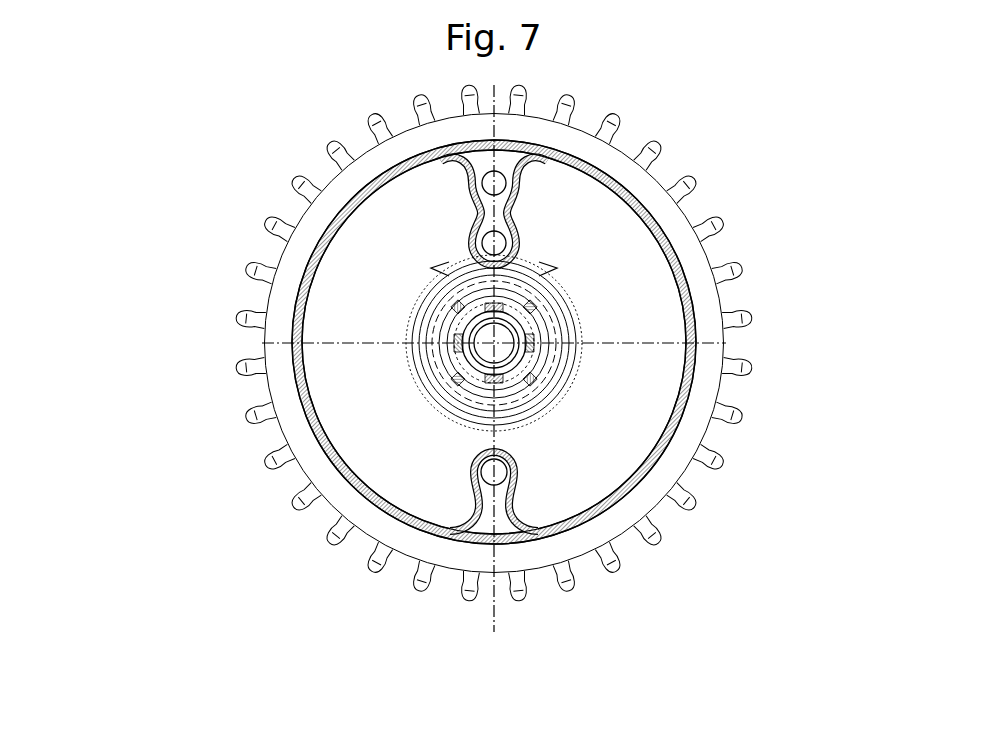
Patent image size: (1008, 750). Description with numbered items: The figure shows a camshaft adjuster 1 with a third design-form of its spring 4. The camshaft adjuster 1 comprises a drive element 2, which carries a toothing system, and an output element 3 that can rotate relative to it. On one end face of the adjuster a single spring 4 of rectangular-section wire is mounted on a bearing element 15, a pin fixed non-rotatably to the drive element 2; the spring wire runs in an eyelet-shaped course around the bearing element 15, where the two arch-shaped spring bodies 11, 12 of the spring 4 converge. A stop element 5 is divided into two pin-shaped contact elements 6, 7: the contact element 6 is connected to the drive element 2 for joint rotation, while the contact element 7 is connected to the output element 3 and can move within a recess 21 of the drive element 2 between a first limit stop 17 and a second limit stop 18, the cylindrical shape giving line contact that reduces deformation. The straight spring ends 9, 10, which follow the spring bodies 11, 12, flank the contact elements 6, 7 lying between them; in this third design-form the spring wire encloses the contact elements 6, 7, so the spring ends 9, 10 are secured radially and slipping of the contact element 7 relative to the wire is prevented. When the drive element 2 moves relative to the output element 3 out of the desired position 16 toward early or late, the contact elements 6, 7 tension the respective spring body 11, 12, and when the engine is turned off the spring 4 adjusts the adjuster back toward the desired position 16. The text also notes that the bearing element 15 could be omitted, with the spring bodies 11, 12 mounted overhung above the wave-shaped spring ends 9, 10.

The camshaft adjuster 1 is at (453, 348).
The desired position 16 is at (152, 172).
The drive element 2 is at (267, 405).
The output element 3 is at (479, 317).
The recess 21 is at (525, 250).
The spring 4 is at (297, 334).
The stop element 5 is at (378, 160).
The contact element 6 is at (491, 182).
The contact element 7 is at (490, 250).
The spring end 9 is at (486, 248).
The spring end 10 is at (508, 220).
The spring body 11 is at (300, 370).
The spring body 12 is at (696, 344).
The bearing element 15 is at (500, 473).
The first limit stop 17 is at (446, 268).
The second limit stop 18 is at (559, 268).